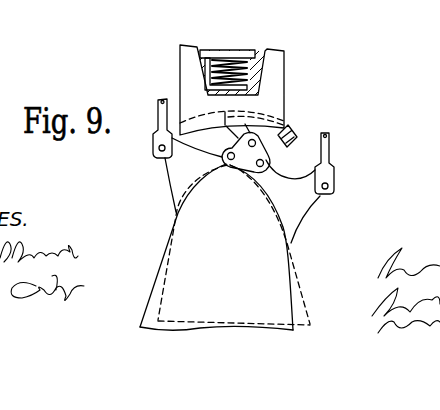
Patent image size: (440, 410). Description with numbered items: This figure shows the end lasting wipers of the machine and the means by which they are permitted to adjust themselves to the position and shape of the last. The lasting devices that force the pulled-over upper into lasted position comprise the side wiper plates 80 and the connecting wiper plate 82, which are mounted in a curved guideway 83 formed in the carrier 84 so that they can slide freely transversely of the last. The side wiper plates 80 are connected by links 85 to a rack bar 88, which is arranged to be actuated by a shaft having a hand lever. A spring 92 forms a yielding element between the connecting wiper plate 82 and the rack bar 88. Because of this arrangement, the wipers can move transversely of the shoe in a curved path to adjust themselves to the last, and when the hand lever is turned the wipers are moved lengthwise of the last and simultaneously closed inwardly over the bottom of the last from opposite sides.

The side wiper plates 80 is at (172, 172).
The connecting wiper plate 82 is at (252, 152).
The curved guideway 83 is at (206, 109).
The carrier 84 is at (273, 92).
The links 85 is at (158, 103).
The rack bar 88 is at (208, 50).
The spring 92 is at (250, 56).